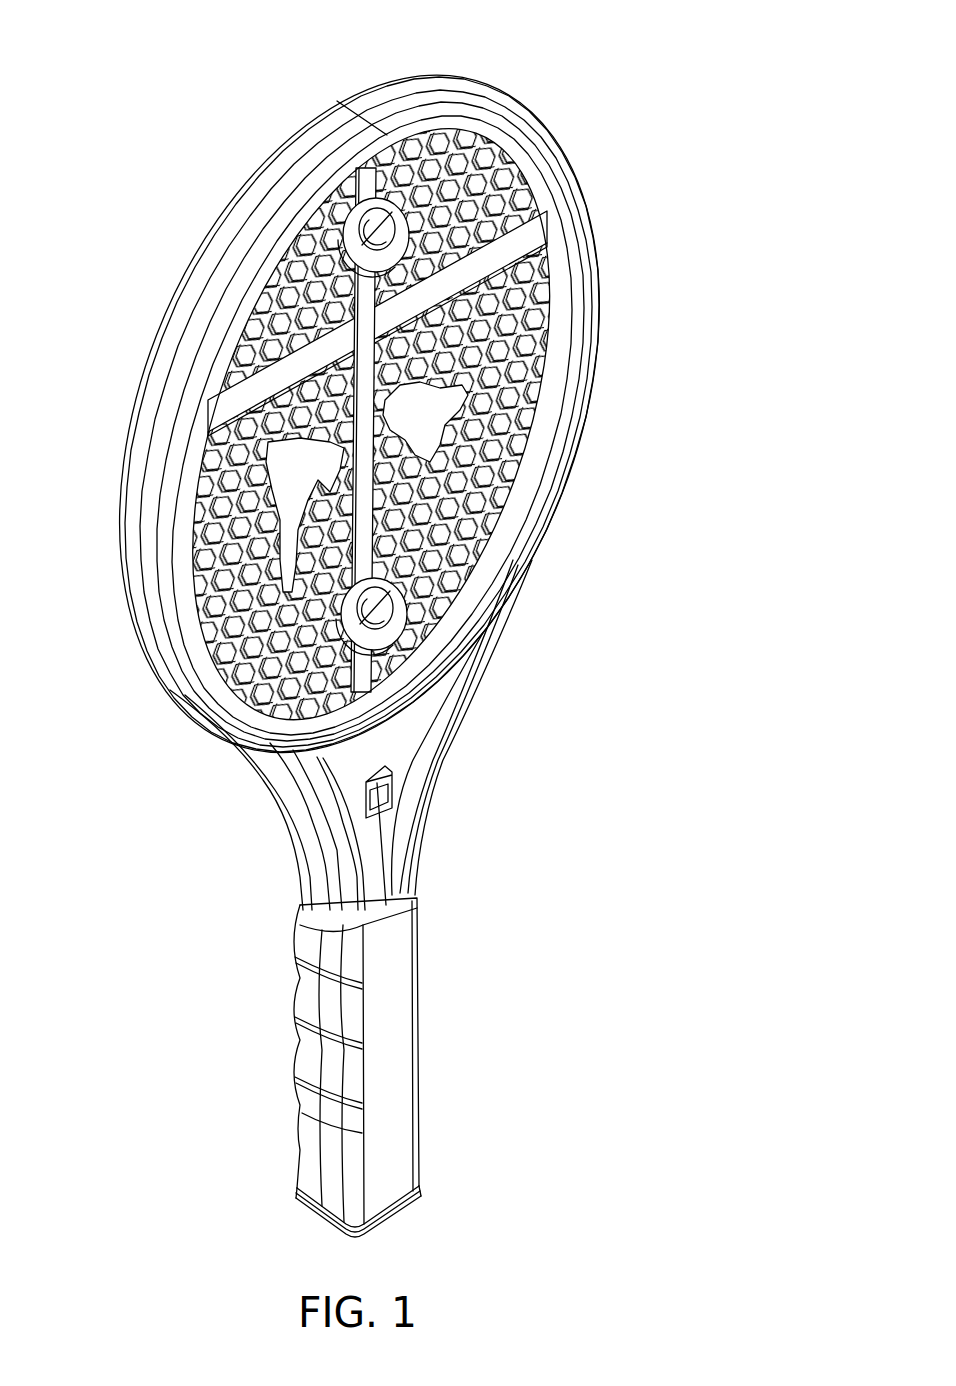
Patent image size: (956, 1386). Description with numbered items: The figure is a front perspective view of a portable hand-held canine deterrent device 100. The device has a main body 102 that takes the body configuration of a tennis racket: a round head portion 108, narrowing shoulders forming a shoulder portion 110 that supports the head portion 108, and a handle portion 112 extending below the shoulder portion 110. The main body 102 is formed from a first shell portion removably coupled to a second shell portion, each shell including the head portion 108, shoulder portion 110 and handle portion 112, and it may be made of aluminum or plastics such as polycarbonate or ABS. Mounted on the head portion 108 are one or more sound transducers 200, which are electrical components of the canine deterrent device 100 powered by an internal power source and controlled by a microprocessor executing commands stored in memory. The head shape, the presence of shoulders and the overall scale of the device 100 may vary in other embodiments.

The canine deterrent device 100 is at (360, 620).
The head portion 108 is at (157, 310).
The sound transducers 200 is at (448, 265).
The main body 102 is at (213, 752).
The shoulder portion 110 is at (460, 773).
The handle portion 112 is at (450, 1046).